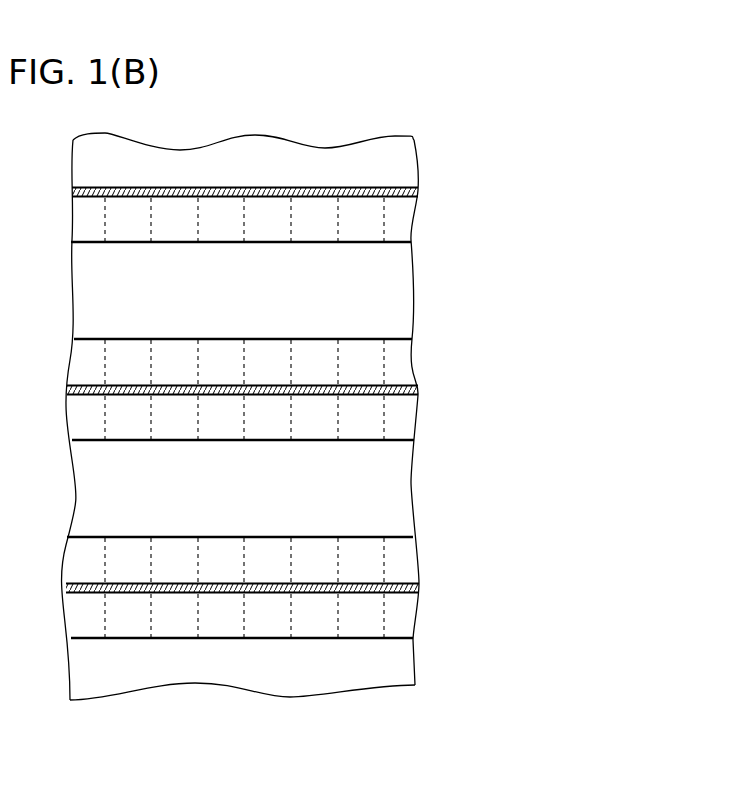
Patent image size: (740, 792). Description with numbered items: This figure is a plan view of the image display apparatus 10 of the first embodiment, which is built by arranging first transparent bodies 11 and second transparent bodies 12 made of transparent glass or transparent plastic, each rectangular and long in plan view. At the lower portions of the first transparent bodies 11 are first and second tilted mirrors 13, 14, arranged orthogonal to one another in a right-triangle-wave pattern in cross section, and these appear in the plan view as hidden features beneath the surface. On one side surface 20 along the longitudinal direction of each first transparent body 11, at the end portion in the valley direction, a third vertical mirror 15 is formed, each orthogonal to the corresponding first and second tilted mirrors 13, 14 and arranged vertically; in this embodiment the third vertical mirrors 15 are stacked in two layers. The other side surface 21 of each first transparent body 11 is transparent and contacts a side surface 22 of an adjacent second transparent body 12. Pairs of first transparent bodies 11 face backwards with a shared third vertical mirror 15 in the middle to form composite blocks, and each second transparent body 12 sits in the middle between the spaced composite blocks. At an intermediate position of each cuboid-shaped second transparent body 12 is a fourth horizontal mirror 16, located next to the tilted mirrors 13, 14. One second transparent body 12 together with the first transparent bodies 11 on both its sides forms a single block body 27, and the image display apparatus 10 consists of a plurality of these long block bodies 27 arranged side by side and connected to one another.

The image display apparatus 10 is at (413, 119).
The first transparent body 11 is at (417, 203).
The second transparent body 12 is at (415, 250).
The first tilted mirror 13 is at (177, 540).
The second tilted mirror 14 is at (128, 550).
The third vertical mirror 15 is at (130, 385).
The fourth horizontal mirror 16 is at (122, 470).
The one side surface 20 is at (178, 383).
The other side surface 21 is at (366, 337).
The side surface 22 is at (313, 440).
The block body 27 is at (495, 413).